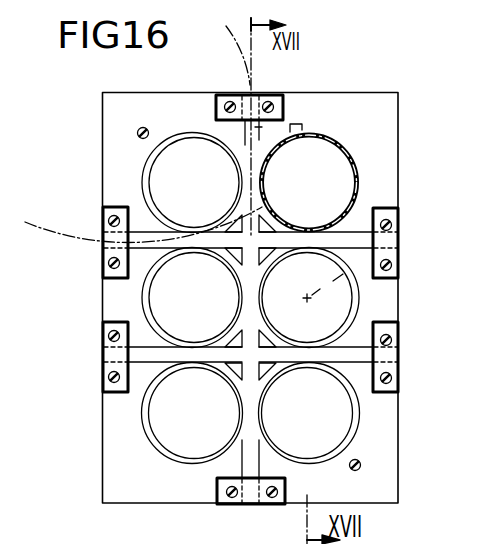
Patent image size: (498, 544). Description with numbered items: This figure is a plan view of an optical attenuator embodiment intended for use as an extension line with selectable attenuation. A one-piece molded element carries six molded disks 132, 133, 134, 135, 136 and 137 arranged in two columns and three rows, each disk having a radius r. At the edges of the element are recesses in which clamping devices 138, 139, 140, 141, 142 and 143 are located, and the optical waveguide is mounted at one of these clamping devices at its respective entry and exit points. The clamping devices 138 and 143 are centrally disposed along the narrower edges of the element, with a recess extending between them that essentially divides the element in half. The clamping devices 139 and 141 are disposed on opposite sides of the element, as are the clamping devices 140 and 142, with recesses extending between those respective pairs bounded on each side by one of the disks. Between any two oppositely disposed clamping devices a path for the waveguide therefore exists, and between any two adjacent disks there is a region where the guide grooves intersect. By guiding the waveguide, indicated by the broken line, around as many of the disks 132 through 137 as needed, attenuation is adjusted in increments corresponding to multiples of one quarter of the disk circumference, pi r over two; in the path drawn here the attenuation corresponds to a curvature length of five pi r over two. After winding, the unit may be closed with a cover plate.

The molded disk 132 is at (162, 183).
The molded disk 133 is at (338, 182).
The molded disk 134 is at (165, 297).
The molded disk 135 is at (336, 306).
The molded disk 136 is at (165, 412).
The molded disk 137 is at (340, 412).
The clamping device 138 is at (263, 96).
The clamping device 139 is at (102, 229).
The clamping device 140 is at (104, 341).
The clamping device 141 is at (396, 232).
The clamping device 142 is at (394, 348).
The clamping device 143 is at (240, 505).